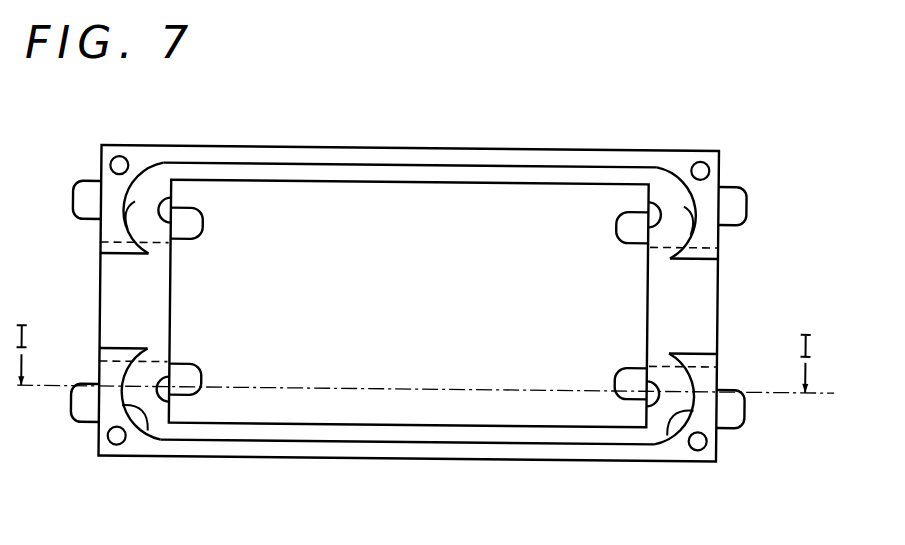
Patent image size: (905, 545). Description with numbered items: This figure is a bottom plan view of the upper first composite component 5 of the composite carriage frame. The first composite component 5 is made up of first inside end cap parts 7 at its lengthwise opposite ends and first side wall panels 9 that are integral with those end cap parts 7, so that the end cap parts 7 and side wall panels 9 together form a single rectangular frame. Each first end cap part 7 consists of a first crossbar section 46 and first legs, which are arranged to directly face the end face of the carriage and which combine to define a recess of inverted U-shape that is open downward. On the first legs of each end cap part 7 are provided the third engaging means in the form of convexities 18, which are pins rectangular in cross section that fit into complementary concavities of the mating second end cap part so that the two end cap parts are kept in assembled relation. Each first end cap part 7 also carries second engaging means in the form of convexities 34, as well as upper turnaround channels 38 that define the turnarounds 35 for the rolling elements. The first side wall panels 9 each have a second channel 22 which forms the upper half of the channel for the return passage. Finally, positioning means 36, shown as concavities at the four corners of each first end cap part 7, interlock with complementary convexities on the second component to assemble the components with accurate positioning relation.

The first composite component 5 is at (589, 147).
The first end cap part 7 is at (110, 198).
The first side wall panel 9 is at (370, 157).
The convexity 18 is at (85, 192).
The second channel 22 is at (428, 167).
The convexity 34 is at (195, 226).
The turnaround 35 is at (128, 203).
The positioning means 36 is at (119, 168).
The upper turnaround channel 38 is at (140, 224).
The first crossbar section 46 is at (125, 303).